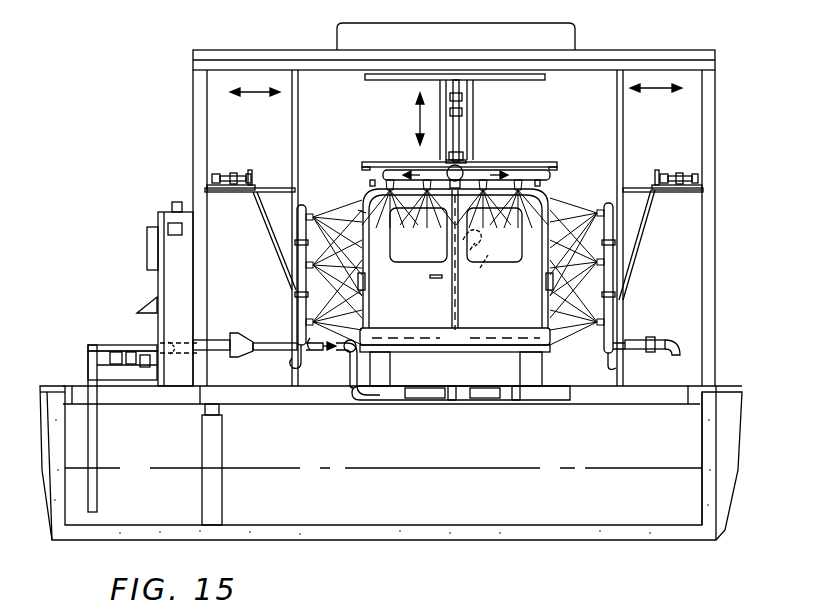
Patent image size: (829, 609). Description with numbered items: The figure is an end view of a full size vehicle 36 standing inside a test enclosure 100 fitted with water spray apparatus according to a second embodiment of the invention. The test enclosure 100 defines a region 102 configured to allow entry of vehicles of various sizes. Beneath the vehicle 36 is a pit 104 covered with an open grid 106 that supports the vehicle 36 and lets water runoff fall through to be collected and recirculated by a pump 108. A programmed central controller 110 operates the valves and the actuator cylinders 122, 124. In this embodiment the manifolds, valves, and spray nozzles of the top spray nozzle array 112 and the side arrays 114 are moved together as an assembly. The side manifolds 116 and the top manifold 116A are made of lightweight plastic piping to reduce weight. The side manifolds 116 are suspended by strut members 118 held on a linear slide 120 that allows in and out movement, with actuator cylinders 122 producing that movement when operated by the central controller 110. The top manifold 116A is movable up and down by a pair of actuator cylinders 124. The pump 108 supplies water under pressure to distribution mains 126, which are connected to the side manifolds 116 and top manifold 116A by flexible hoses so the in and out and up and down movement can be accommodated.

The vehicle 36 is at (368, 197).
The test enclosure 100 is at (182, 68).
The region 102 is at (358, 213).
The pit 104 is at (388, 460).
The open grid 106 is at (250, 398).
The pump 108 is at (128, 334).
The programmed central controller 110 is at (142, 217).
The top spray nozzle array 112 is at (364, 184).
The side arrays 114 is at (296, 190).
The side manifolds 116 is at (283, 228).
The top manifold 116A is at (558, 170).
The strut members 118 is at (268, 255).
The linear slide 120 is at (262, 185).
The actuator cylinders 122 is at (218, 164).
The actuator cylinders 124 is at (485, 108).
The distribution mains 126 is at (272, 364).